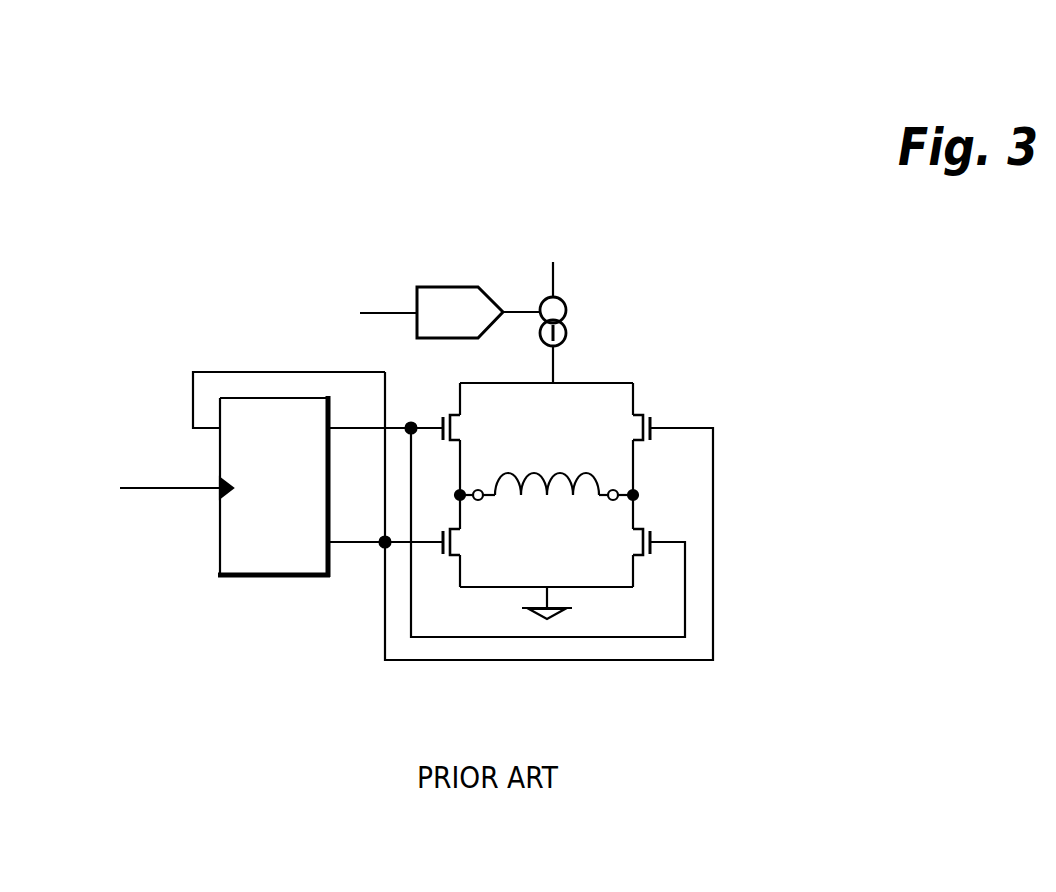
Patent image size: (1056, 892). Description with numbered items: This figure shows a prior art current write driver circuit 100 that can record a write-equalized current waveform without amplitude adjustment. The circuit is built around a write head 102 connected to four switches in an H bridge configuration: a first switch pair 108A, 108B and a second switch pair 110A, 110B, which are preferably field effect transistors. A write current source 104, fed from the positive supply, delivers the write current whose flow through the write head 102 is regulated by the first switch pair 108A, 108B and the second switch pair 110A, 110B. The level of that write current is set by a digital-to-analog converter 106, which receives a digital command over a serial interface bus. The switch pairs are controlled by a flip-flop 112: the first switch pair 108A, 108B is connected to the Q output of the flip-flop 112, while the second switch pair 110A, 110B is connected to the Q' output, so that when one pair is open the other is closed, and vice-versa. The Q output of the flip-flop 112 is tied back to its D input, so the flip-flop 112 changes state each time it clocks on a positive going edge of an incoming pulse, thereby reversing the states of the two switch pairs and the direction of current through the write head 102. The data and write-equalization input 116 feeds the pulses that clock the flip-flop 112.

The current write driver circuit 100 is at (850, 631).
The write head 102 is at (546, 479).
The write current source 104 is at (591, 304).
The digital-to-analog converter (DAC) 106 is at (478, 278).
The first switch pair transistor 108A is at (425, 395).
The first switch pair transistor 108B is at (646, 581).
The second switch pair transistor 110A is at (665, 395).
The second switch pair transistor 110B is at (443, 581).
The flip-flop 112 is at (274, 525).
The data and write enable input 116 is at (141, 507).